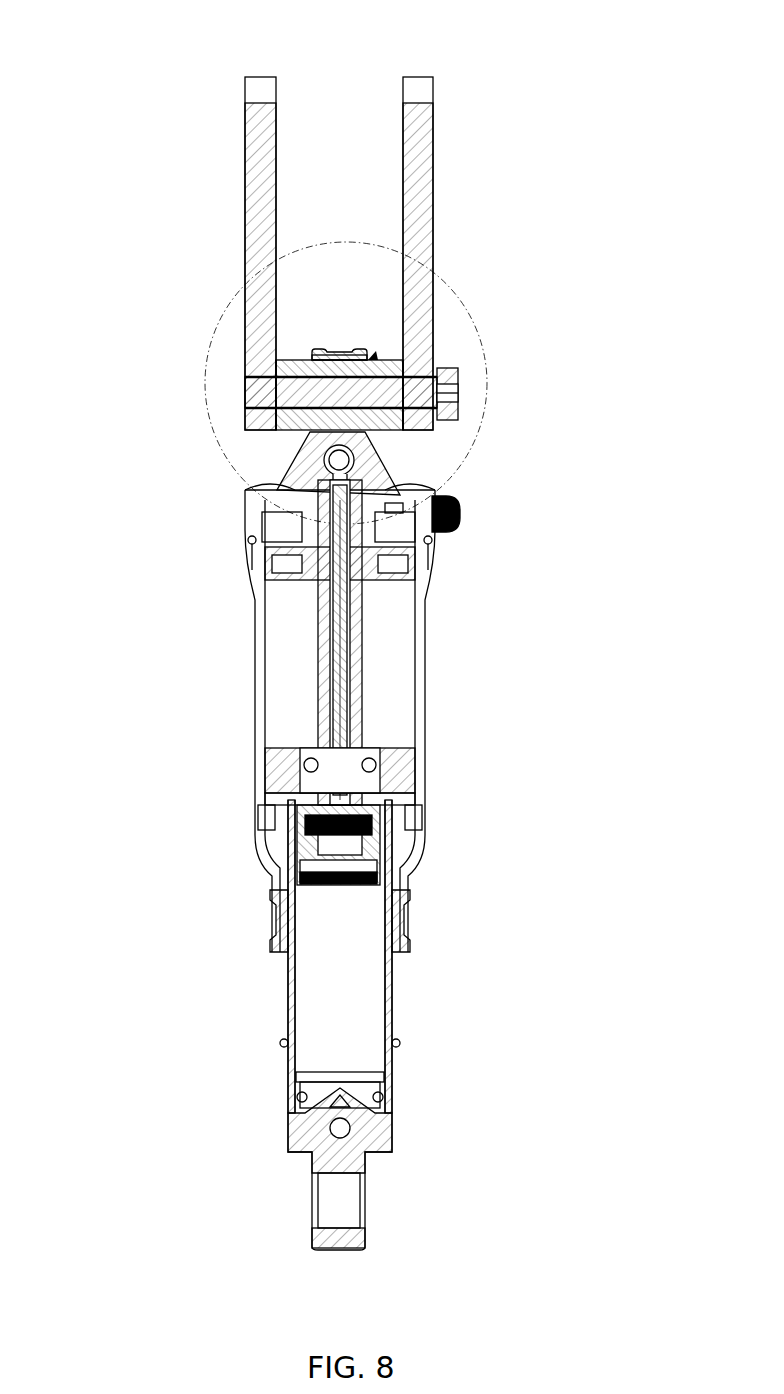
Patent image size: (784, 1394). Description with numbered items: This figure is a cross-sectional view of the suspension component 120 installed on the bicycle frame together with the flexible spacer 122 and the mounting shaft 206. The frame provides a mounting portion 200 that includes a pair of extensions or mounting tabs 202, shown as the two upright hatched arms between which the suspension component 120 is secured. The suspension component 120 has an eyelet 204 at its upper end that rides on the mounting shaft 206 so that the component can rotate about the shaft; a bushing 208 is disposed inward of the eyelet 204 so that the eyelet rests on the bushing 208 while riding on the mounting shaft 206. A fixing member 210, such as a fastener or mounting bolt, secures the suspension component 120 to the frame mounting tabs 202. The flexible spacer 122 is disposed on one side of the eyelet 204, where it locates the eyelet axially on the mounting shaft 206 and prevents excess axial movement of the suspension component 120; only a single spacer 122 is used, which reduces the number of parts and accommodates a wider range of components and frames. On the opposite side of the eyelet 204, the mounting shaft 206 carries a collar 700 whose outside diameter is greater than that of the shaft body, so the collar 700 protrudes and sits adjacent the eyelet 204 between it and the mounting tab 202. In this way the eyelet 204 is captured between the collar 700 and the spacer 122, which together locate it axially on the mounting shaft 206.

The mounting portion 200 is at (200, 56).
The mounting tabs 202 is at (245, 175).
The collar 700 is at (288, 358).
The eyelet 204 is at (336, 350).
The flexible spacer 122 is at (398, 355).
The mounting shaft 206 is at (402, 358).
The fixing member 210 is at (458, 372).
The bushing 208 is at (362, 430).
The suspension component 120 is at (245, 590).